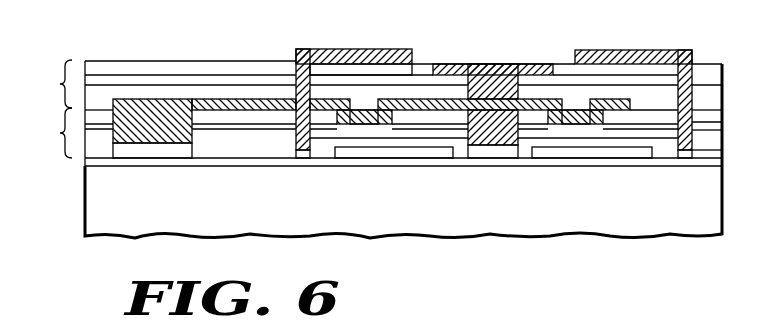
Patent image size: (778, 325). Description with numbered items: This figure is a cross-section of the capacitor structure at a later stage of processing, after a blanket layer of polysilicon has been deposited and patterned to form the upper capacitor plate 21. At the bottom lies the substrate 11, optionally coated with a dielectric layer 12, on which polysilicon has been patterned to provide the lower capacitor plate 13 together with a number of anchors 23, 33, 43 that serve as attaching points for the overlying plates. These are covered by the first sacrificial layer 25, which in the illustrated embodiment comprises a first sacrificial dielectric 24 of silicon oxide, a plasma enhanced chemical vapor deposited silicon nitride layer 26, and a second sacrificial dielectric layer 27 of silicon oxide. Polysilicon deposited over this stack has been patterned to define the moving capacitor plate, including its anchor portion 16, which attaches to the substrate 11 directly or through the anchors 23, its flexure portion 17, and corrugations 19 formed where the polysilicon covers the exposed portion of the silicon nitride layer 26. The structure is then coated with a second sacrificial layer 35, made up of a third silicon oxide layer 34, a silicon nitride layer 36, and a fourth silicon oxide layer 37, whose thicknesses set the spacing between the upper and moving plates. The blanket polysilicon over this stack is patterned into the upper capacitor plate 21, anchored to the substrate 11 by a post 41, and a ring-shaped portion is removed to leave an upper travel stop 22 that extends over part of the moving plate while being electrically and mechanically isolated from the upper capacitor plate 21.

The substrate 11 is at (215, 208).
The dielectric layer 12 is at (406, 162).
The lower capacitor plate 13 is at (437, 152).
The anchor portion 16 is at (158, 122).
The flexure portion 17 is at (293, 102).
The corrugations 19 is at (360, 118).
The upper capacitor plate 21 is at (371, 49).
The upper travel stop 22 is at (482, 66).
The anchor 23 is at (154, 152).
The first sacrificial dielectric 24 is at (714, 153).
The sacrificial layer 25 is at (49, 133).
The silicon nitride layer 26 is at (722, 131).
The second sacrificial dielectric layer 27 is at (722, 124).
The anchor 33 is at (302, 152).
The third silicon oxide layer 34 is at (722, 103).
The second sacrificial layer 35 is at (49, 84).
The silicon nitride layer 36 is at (722, 78).
The fourth silicon oxide layer 37 is at (713, 63).
The post 41 is at (520, 66).
The anchor 43 is at (497, 158).